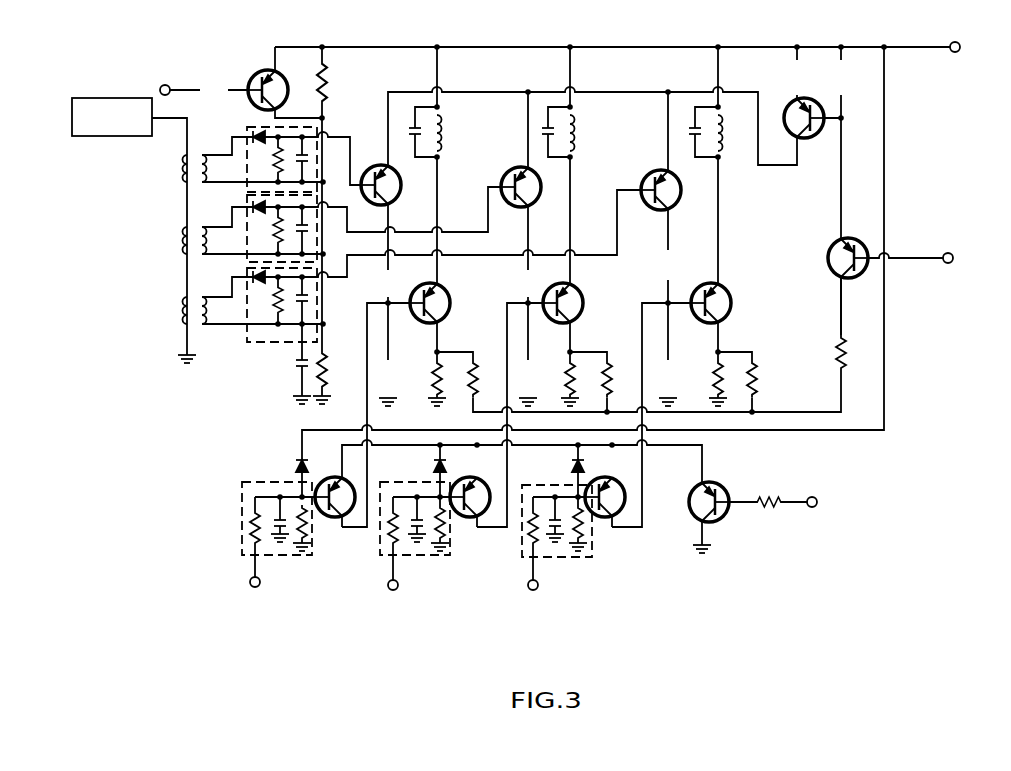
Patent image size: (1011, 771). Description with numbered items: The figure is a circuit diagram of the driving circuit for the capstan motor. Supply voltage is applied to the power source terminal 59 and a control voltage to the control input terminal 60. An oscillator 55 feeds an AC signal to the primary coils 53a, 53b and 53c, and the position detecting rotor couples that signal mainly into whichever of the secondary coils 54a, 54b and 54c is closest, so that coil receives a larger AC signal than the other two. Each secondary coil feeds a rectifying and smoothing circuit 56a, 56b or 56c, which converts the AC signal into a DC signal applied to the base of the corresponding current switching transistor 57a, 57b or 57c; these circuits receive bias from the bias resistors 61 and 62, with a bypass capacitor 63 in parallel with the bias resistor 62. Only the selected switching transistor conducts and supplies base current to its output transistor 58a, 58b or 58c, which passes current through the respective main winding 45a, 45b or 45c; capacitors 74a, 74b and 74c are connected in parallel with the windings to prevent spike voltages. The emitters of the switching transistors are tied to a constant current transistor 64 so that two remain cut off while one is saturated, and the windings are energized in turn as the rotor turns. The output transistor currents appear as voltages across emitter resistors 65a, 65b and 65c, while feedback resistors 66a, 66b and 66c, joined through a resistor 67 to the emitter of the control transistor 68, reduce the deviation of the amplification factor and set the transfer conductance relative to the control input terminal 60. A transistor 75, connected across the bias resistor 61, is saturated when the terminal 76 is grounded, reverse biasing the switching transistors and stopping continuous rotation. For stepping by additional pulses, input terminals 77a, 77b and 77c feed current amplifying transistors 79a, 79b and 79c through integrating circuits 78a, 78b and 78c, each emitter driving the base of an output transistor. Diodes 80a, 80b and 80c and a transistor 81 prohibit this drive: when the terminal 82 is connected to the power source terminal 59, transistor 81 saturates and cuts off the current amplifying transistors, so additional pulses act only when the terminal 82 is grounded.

The oscillator 55 is at (96, 97).
The terminal 76 is at (172, 70).
The transistor 75 is at (259, 72).
The bias resistor 61 is at (328, 88).
The bias resistor 62 is at (327, 352).
The bypass capacitor 63 is at (300, 366).
The secondary coil 54a is at (184, 152).
The secondary coil 54b is at (184, 226).
The secondary coil 54c is at (184, 296).
The primary coil 53a is at (180, 173).
The primary coil 53b is at (181, 245).
The primary coil 53c is at (181, 314).
The rectifying and smoothing circuit 56a is at (247, 130).
The rectifying and smoothing circuit 56b is at (247, 202).
The rectifying and smoothing circuit 56c is at (249, 343).
The current switching transistor 57a is at (399, 196).
The current switching transistor 57b is at (510, 177).
The current switching transistor 57c is at (647, 178).
The output transistor 58a is at (450, 298).
The output transistor 58b is at (584, 297).
The output transistor 58c is at (732, 297).
The capacitor 74a is at (410, 126).
The capacitor 74b is at (543, 126).
The capacitor 74c is at (688, 126).
The main winding 45a is at (443, 136).
The main winding 45b is at (576, 136).
The main winding 45c is at (725, 132).
The constant current transistor 64 is at (811, 138).
The control transistor 68 is at (830, 246).
The resistor 67 is at (846, 352).
The emitter resistor 65a is at (441, 365).
The emitter resistor 65b is at (574, 365).
The emitter resistor 65c is at (722, 365).
The feedback resistor 66a is at (487, 356).
The feedback resistor 66b is at (620, 356).
The feedback resistor 66c is at (756, 368).
The power source terminal 59 is at (960, 44).
The control input terminal 60 is at (953, 253).
The input terminal 77a is at (259, 587).
The input terminal 77b is at (396, 590).
The input terminal 77c is at (536, 590).
The integrating circuit 78a is at (284, 557).
The integrating circuit 78b is at (422, 558).
The integrating circuit 78c is at (560, 560).
The current amplifying transistor 79a is at (330, 518).
The current amplifying transistor 79b is at (466, 518).
The current amplifying transistor 79c is at (600, 518).
The diode 80a is at (297, 464).
The diode 80b is at (432, 466).
The diode 80c is at (570, 466).
The transistor 81 is at (727, 491).
The terminal 82 is at (818, 506).